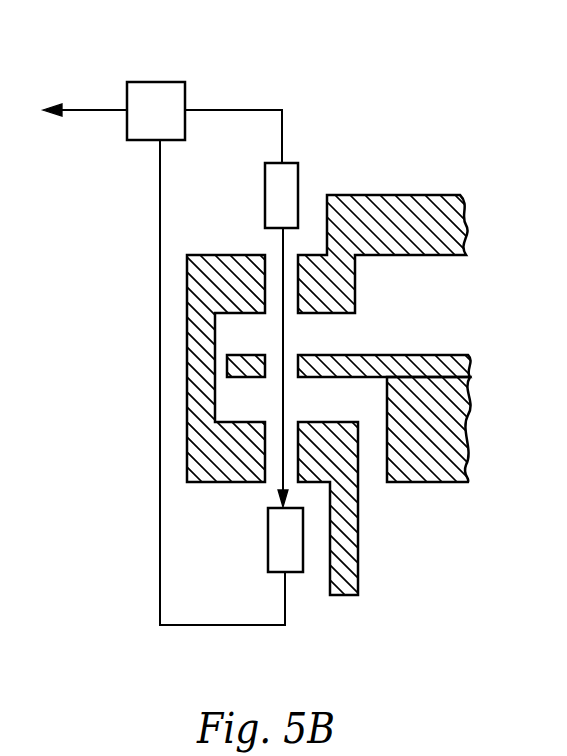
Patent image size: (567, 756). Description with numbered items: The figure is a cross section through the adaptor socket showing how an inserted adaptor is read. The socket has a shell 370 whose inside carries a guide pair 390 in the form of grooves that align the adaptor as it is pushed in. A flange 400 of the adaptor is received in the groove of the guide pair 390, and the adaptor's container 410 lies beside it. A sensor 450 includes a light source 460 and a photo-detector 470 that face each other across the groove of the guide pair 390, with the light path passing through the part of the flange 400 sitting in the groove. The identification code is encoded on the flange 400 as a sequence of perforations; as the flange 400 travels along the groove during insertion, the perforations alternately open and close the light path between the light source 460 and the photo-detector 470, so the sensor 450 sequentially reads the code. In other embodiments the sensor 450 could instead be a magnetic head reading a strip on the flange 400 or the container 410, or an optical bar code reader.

The shell 370 is at (408, 195).
The guide pair 390 is at (203, 368).
The flange 400 is at (445, 355).
The container 410 is at (447, 460).
The sensor 450 is at (158, 82).
The light source 460 is at (265, 216).
The photo-detector 470 is at (268, 560).